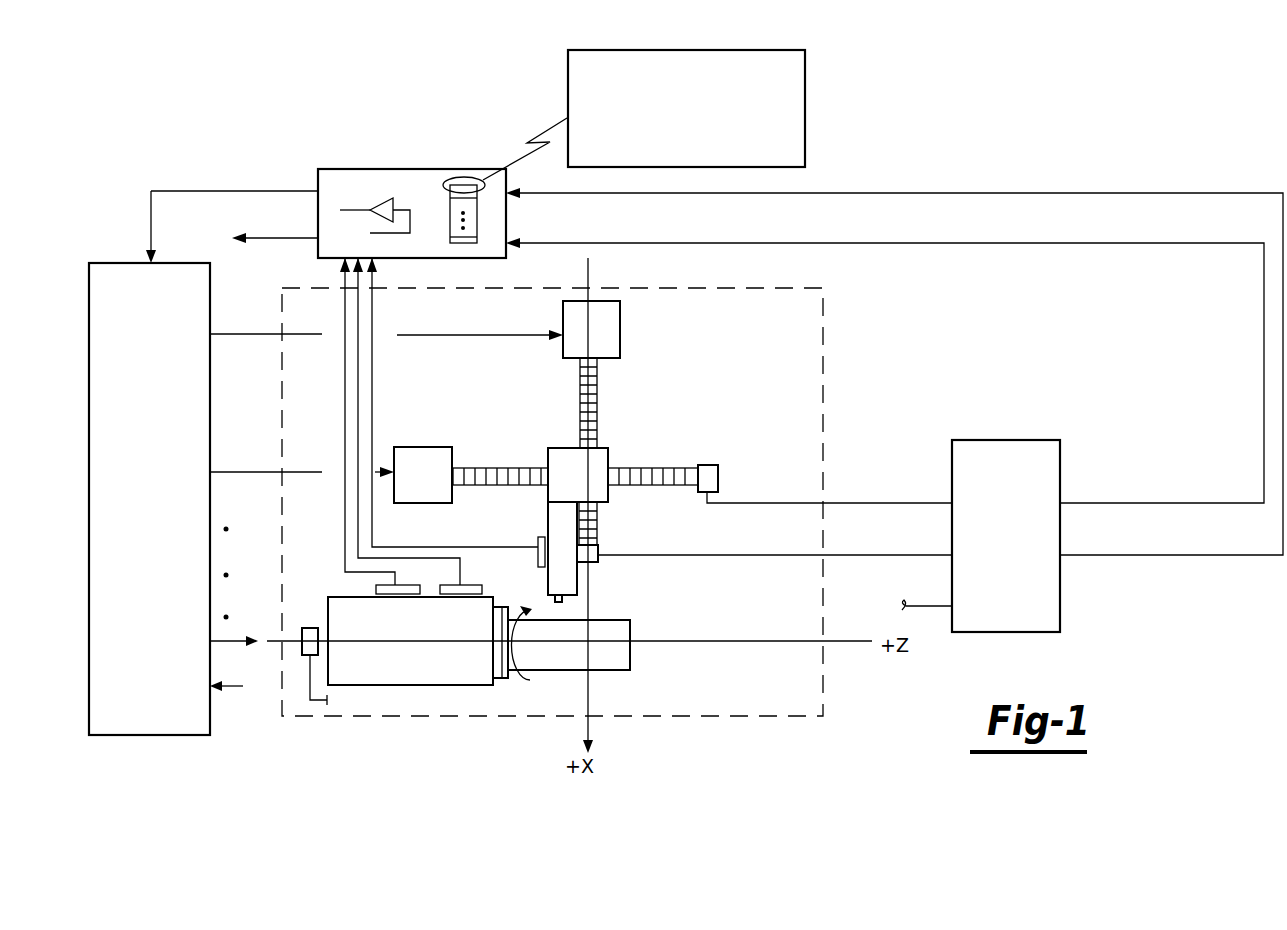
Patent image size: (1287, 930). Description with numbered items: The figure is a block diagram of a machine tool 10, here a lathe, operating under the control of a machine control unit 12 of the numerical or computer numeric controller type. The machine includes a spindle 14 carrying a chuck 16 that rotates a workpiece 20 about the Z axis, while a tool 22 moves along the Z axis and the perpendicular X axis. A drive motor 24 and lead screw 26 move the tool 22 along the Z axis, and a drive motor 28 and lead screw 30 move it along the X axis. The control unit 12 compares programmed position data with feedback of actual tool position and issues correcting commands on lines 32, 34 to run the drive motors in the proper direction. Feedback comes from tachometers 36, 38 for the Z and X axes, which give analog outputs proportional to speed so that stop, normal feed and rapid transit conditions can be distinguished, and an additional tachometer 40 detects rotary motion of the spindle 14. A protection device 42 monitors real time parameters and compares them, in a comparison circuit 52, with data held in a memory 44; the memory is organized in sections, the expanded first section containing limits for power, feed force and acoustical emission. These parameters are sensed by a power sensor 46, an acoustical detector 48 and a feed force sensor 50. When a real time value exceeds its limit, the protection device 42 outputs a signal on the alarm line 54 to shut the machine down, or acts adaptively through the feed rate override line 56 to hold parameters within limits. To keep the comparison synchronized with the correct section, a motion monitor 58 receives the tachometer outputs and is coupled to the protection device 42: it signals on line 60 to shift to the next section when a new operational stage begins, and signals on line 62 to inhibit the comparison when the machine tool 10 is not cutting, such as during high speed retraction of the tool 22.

The machine tool 10 is at (823, 340).
The machine control unit 12 is at (110, 733).
The machine spindle 14 is at (420, 677).
The chuck 16 is at (490, 677).
The workpiece 20 is at (563, 665).
The tool 22 is at (565, 598).
The drive motor 24 is at (418, 447).
The lead screw 26 is at (484, 467).
The drive motor 28 is at (620, 345).
The lead screw 30 is at (598, 402).
The line 32 is at (234, 334).
The line 34 is at (260, 472).
The tachometer 36 is at (708, 466).
The tachometer 38 is at (598, 545).
The tachometer 40 is at (305, 655).
The protection device 42 is at (512, 237).
The memory 44 is at (480, 220).
The power sensor 46 is at (376, 589).
The acoustical detector 48 is at (470, 588).
The feed force sensor 50 is at (538, 539).
The comparison circuit 52 is at (390, 204).
The alarm line 54 is at (184, 194).
The feed rate override line 56 is at (267, 240).
The motion monitor 58 is at (1058, 463).
The section change line 60 is at (1097, 243).
The inhibit line 62 is at (1112, 193).